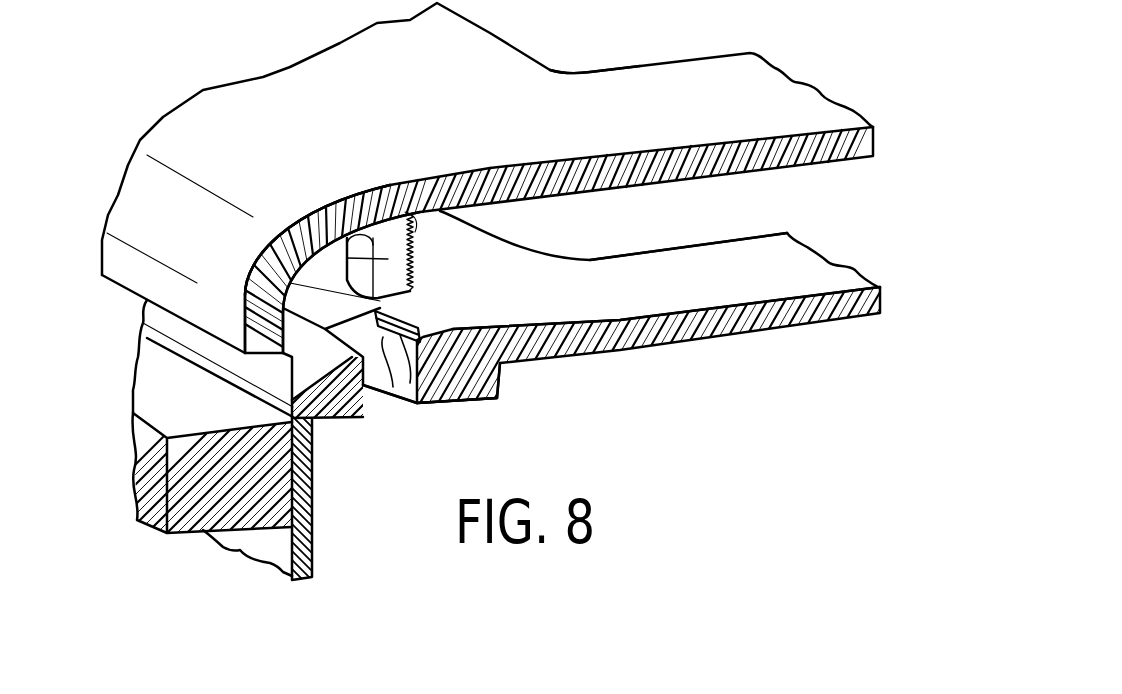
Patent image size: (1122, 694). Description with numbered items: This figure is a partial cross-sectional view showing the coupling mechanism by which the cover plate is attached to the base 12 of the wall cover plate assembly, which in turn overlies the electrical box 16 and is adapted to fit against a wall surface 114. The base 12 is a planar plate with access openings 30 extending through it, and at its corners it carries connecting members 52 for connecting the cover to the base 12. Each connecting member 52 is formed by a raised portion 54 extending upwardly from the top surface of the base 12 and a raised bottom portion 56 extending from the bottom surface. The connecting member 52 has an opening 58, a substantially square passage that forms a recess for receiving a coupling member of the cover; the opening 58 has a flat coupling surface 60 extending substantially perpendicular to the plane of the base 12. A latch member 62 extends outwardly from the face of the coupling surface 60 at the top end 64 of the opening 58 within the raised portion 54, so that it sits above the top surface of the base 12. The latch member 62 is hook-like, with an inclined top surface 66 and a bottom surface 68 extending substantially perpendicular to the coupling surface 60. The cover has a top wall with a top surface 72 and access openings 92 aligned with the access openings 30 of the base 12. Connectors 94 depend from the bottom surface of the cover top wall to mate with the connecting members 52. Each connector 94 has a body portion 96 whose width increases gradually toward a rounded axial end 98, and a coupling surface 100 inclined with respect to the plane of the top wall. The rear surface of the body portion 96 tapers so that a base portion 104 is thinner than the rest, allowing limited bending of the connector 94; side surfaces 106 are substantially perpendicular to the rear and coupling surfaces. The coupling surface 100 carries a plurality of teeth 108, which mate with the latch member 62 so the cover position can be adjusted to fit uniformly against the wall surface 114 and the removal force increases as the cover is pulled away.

The base 12 is at (738, 229).
The electrical box 16 is at (312, 527).
The access openings 30 is at (636, 252).
The connecting members 52 is at (452, 309).
The raised portion 54 is at (472, 327).
The raised bottom portion 56 is at (500, 377).
The opening 58 is at (372, 418).
The coupling surface 60 is at (432, 403).
The latch member 62 is at (390, 388).
The top end 64 is at (440, 311).
The inclined top surface 66 is at (338, 343).
The bottom surface 68 is at (406, 392).
The top surface 72 is at (670, 90).
The access openings 92 is at (593, 71).
The connectors 94 is at (336, 268).
The body portion 96 is at (395, 232).
The axial end 98 is at (290, 283).
The coupling surface 100 is at (422, 254).
The base portion 104 is at (352, 236).
The side surfaces 106 is at (320, 217).
The teeth 108 is at (443, 177).
The wall surface 114 is at (177, 407).